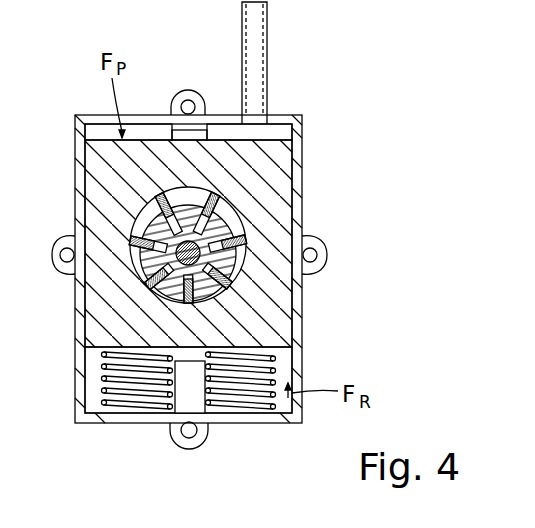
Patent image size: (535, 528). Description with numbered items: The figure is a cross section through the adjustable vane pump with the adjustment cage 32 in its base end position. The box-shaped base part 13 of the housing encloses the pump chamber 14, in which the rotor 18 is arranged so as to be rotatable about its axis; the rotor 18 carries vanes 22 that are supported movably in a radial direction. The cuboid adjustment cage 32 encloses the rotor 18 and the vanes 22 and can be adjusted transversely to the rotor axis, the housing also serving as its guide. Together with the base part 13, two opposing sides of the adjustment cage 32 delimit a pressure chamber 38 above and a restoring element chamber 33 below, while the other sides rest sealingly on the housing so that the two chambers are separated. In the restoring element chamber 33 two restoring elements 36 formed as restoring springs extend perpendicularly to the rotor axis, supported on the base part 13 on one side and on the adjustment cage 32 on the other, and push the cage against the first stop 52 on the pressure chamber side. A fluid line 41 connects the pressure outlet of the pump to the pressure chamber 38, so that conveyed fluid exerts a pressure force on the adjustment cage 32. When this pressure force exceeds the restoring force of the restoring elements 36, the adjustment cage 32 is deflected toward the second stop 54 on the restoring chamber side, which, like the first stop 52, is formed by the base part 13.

The base part 13 is at (298, 221).
The pump chamber 14 is at (230, 213).
The rotor 18 is at (168, 290).
The vanes 22 is at (158, 208).
The adjustment cage 32 is at (97, 153).
The restoring element chamber 33 is at (95, 378).
The restoring elements 36 is at (273, 373).
The pressure chamber 38 is at (92, 130).
The fluid line 41 is at (258, 70).
The first stop 52 is at (180, 132).
The second stop 54 is at (195, 362).